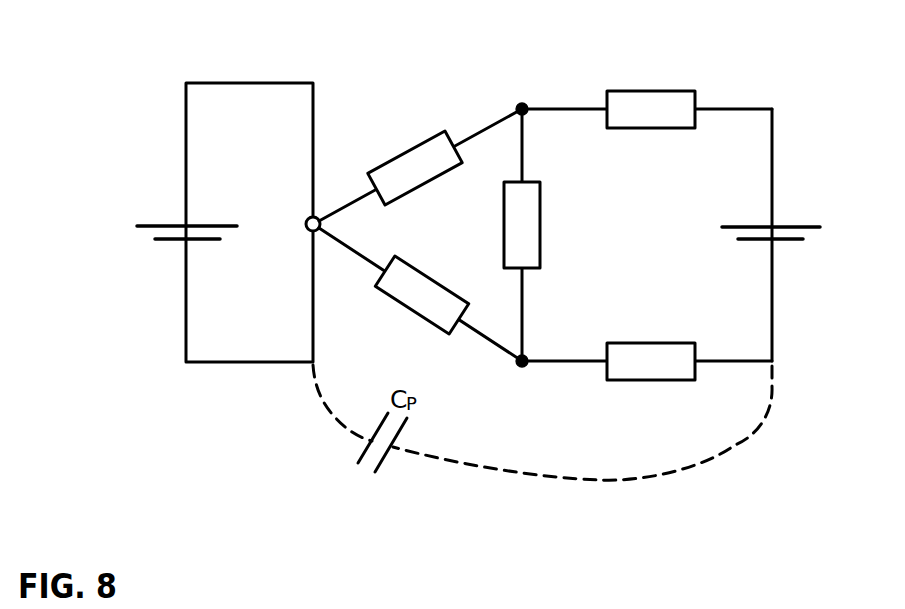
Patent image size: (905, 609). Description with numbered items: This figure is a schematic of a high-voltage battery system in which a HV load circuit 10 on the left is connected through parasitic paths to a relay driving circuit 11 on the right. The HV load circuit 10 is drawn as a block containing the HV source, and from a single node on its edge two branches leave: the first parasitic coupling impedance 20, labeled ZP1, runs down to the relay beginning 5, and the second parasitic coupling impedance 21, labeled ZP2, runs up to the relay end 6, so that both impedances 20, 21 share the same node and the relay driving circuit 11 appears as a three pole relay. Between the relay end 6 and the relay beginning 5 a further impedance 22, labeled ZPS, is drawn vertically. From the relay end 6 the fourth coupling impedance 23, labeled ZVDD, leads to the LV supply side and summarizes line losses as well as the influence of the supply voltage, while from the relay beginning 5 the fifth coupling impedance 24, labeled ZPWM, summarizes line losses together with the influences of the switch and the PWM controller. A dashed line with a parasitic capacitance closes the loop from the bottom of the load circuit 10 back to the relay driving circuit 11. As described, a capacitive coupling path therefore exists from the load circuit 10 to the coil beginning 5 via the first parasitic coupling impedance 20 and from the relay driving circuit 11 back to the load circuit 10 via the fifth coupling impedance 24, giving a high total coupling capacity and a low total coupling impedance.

The HV load circuit 10 is at (260, 83).
The relay driving circuit 11 is at (773, 185).
The relay beginning 5 is at (527, 368).
The relay end 6 is at (528, 104).
The first parasitic coupling impedance 20 is at (455, 337).
The second parasitic coupling impedance 21 is at (431, 140).
The coupling impedance 22 is at (542, 191).
The fourth coupling impedance 23 is at (696, 88).
The fifth coupling impedance 24 is at (665, 382).